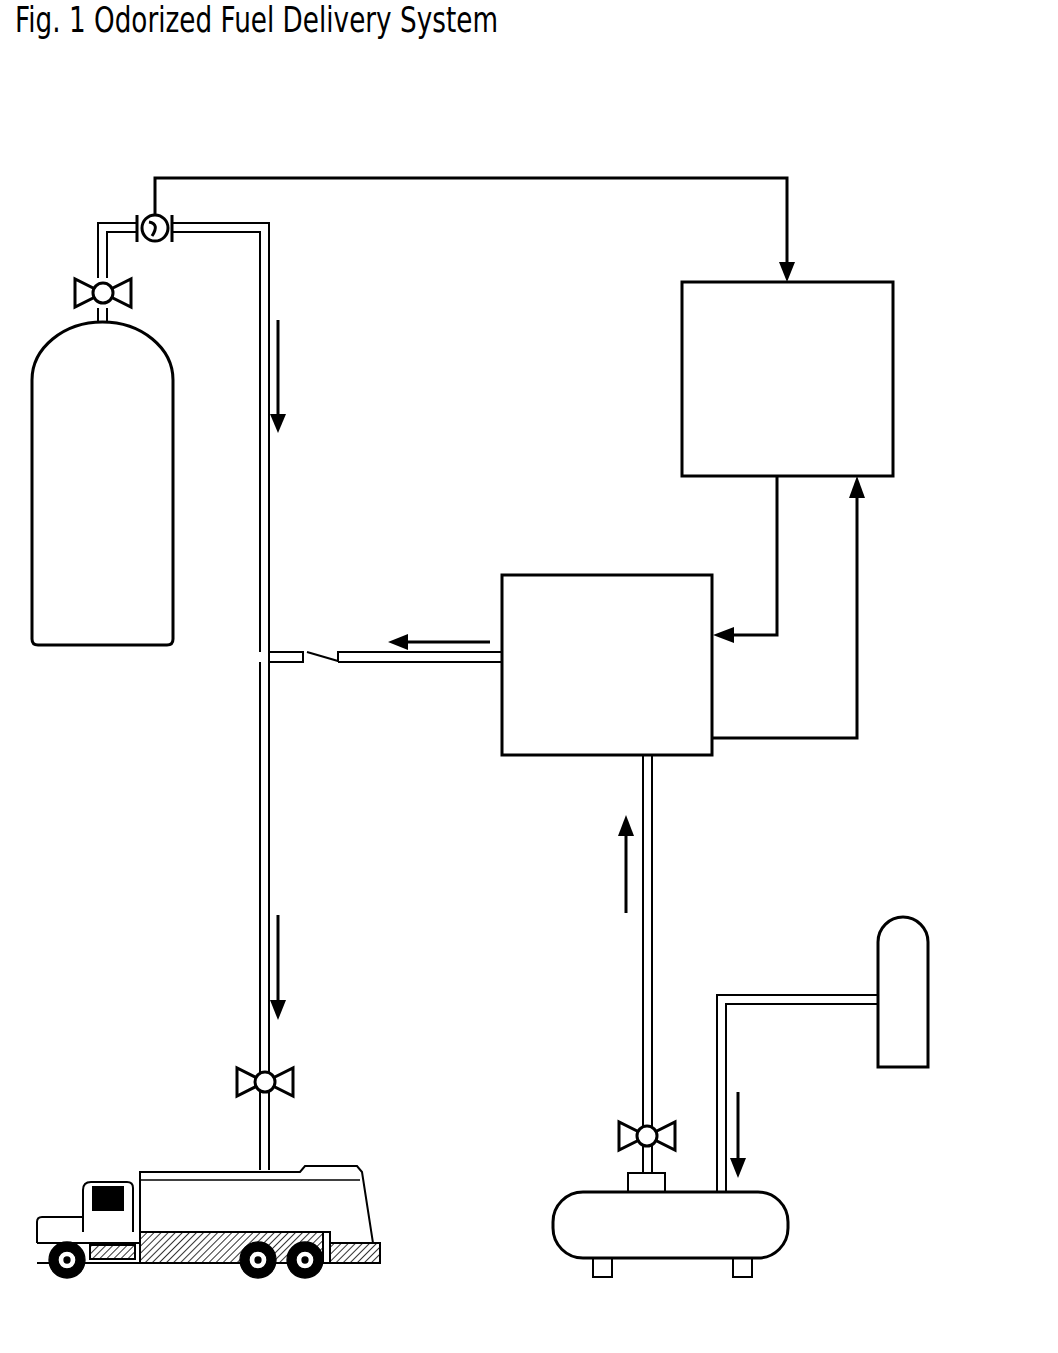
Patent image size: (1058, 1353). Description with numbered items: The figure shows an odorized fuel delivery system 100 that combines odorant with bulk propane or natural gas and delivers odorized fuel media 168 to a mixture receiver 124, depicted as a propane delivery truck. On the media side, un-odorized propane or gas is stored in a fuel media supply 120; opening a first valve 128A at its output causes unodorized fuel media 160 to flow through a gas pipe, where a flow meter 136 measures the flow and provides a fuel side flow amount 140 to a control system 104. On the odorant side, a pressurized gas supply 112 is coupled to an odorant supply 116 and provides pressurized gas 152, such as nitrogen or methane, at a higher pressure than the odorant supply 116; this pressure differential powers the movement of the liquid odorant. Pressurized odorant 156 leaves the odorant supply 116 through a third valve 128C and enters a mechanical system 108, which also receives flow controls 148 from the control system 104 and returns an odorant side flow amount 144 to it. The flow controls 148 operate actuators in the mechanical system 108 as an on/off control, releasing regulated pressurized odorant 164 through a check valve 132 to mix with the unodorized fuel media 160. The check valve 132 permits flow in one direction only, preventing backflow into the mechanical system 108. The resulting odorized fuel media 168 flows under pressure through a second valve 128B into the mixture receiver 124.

The odorized fuel delivery system 100 is at (867, 93).
The control system 104 is at (800, 400).
The mechanical system 108 is at (620, 686).
The pressurized gas supply 112 is at (902, 917).
The odorant supply 116 is at (685, 1249).
The fuel media supply 120 is at (115, 506).
The mixture receiver 124 is at (273, 1224).
The first valve 128A is at (78, 277).
The second valve 128B is at (295, 1073).
The third valve 128C is at (618, 1137).
The check valve 132 is at (322, 664).
The flow meter 136 is at (153, 221).
The fuel side flow amount 140 is at (475, 218).
The odorant side flow amount 144 is at (788, 607).
The flow controls 148 is at (712, 559).
The pressurized gas 152 is at (795, 1135).
The pressurized odorant 156 is at (570, 864).
The unodorized fuel media 160 is at (361, 376).
The regulated pressurized odorant 164 is at (420, 620).
The odorized fuel media 168 is at (348, 967).